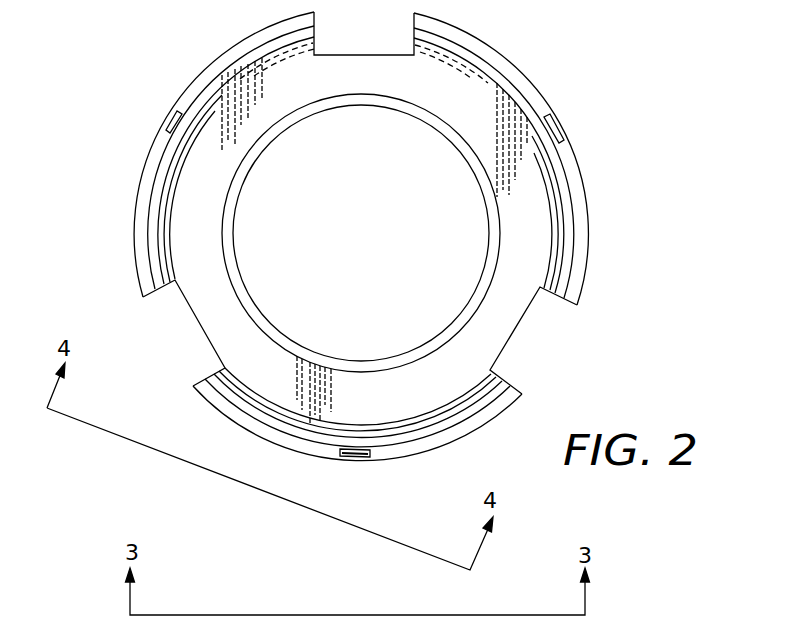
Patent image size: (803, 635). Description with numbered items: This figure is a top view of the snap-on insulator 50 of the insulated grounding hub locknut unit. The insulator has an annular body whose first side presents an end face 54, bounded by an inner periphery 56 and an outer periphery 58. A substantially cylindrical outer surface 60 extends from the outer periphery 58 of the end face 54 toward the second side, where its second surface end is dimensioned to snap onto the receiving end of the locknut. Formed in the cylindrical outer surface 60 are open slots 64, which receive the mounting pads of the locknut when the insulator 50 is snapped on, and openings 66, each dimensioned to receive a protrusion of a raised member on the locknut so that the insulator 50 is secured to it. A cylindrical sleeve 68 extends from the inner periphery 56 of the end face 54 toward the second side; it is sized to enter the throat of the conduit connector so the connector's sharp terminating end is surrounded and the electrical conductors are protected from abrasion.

The snap-on insulator 50 is at (645, 85).
The end face 54 is at (540, 220).
The inner periphery 56 is at (225, 207).
The outer periphery 58 is at (210, 100).
The cylindrical outer surface 60 is at (142, 208).
The open slots 64 is at (190, 352).
The openings 66 is at (348, 462).
The cylindrical sleeve 68 is at (279, 342).